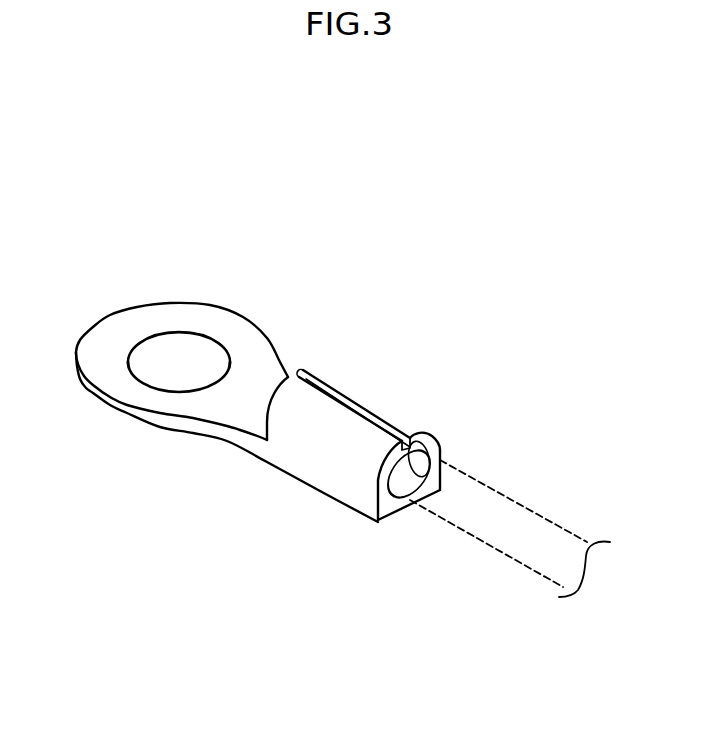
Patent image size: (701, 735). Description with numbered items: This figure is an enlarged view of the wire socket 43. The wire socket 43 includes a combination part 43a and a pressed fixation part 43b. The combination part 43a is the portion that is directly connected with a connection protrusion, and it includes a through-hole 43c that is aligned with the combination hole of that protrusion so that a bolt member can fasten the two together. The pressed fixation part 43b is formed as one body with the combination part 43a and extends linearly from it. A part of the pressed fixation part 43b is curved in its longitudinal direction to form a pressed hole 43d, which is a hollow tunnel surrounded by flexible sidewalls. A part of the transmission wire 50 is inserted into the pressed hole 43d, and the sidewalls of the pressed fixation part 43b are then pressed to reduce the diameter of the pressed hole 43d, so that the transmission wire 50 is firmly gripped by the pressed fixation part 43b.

The wire socket 43 is at (364, 320).
The combination part 43a is at (183, 425).
The pressed fixation part 43b is at (342, 467).
The through-hole 43c is at (148, 372).
The pressed hole 43d is at (416, 448).
The transmission wire 50 is at (525, 508).